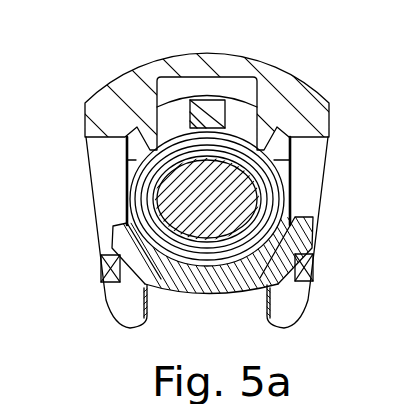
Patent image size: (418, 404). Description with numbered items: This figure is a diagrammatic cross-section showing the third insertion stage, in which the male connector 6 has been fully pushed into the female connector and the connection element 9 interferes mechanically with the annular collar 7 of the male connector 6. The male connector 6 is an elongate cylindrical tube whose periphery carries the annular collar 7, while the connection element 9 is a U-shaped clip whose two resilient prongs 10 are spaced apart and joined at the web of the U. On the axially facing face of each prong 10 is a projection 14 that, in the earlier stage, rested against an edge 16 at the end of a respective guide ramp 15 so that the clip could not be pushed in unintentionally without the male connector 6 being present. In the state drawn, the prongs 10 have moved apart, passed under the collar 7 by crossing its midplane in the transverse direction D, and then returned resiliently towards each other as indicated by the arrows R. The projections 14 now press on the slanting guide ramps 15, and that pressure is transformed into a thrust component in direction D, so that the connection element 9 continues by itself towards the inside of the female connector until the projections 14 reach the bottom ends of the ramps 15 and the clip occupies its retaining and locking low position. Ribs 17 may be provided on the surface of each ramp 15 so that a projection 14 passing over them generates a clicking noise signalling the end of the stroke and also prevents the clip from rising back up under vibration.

The connection element 9 is at (70, 127).
The annular collar 7 is at (116, 176).
The male connector 6 is at (232, 149).
The resilient prongs 10 is at (108, 232).
The edge 16 is at (122, 211).
The guide ramps 15 is at (113, 248).
The projection 14 is at (103, 264).
The ribs 17 is at (250, 293).
The arrow D is at (209, 78).
The arrows R is at (104, 166).